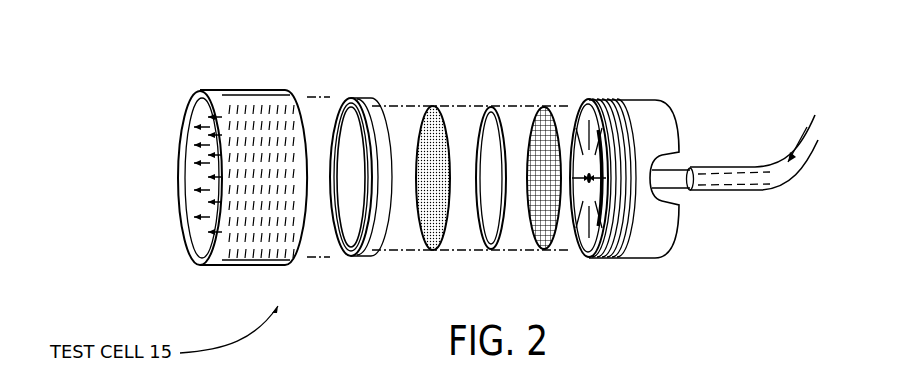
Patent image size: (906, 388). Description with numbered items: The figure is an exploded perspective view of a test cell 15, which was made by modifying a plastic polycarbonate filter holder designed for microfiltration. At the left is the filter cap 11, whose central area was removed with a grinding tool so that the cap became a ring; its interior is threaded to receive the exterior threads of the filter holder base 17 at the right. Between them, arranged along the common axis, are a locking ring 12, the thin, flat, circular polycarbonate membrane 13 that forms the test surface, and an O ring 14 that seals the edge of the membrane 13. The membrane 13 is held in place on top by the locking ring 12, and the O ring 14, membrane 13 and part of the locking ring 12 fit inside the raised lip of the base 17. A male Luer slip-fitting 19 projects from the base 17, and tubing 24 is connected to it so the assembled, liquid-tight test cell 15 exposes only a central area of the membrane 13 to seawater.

The filter cap 11 is at (254, 89).
The locking ring 12 is at (353, 98).
The polycarbonate membrane 13 is at (433, 106).
The O ring 14 is at (491, 107).
The test cell 15 is at (545, 107).
The filter holder base 17 is at (640, 100).
The male Luer slip-fitting 19 is at (681, 165).
The tubing 24 is at (792, 177).